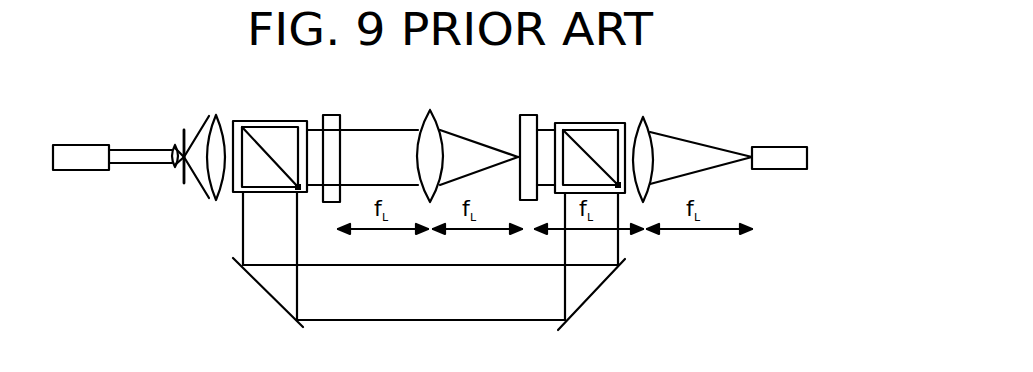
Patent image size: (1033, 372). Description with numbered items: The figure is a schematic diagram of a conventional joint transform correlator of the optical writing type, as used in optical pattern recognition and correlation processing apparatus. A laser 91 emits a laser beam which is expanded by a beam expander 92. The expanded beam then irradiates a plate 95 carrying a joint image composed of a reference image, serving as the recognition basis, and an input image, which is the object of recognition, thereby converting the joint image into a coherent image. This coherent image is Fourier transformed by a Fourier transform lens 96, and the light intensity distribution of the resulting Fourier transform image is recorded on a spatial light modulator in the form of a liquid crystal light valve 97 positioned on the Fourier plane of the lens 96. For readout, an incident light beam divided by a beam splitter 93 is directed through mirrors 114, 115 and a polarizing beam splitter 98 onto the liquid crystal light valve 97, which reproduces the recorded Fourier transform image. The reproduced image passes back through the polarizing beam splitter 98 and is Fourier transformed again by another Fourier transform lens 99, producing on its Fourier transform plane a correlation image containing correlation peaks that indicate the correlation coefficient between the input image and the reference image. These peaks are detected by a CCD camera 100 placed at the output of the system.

The laser 91 is at (72, 143).
The beam expander 92 is at (184, 132).
The beam splitter 93 is at (275, 127).
The plate 95 is at (332, 122).
The Fourier transform lens 96 is at (433, 125).
The liquid crystal light valve 97 is at (530, 123).
The polarizing beam splitter 98 is at (590, 127).
The Fourier transform lens 99 is at (647, 130).
The CCD camera 100 is at (782, 147).
The mirror 114 is at (277, 305).
The mirror 115 is at (592, 295).